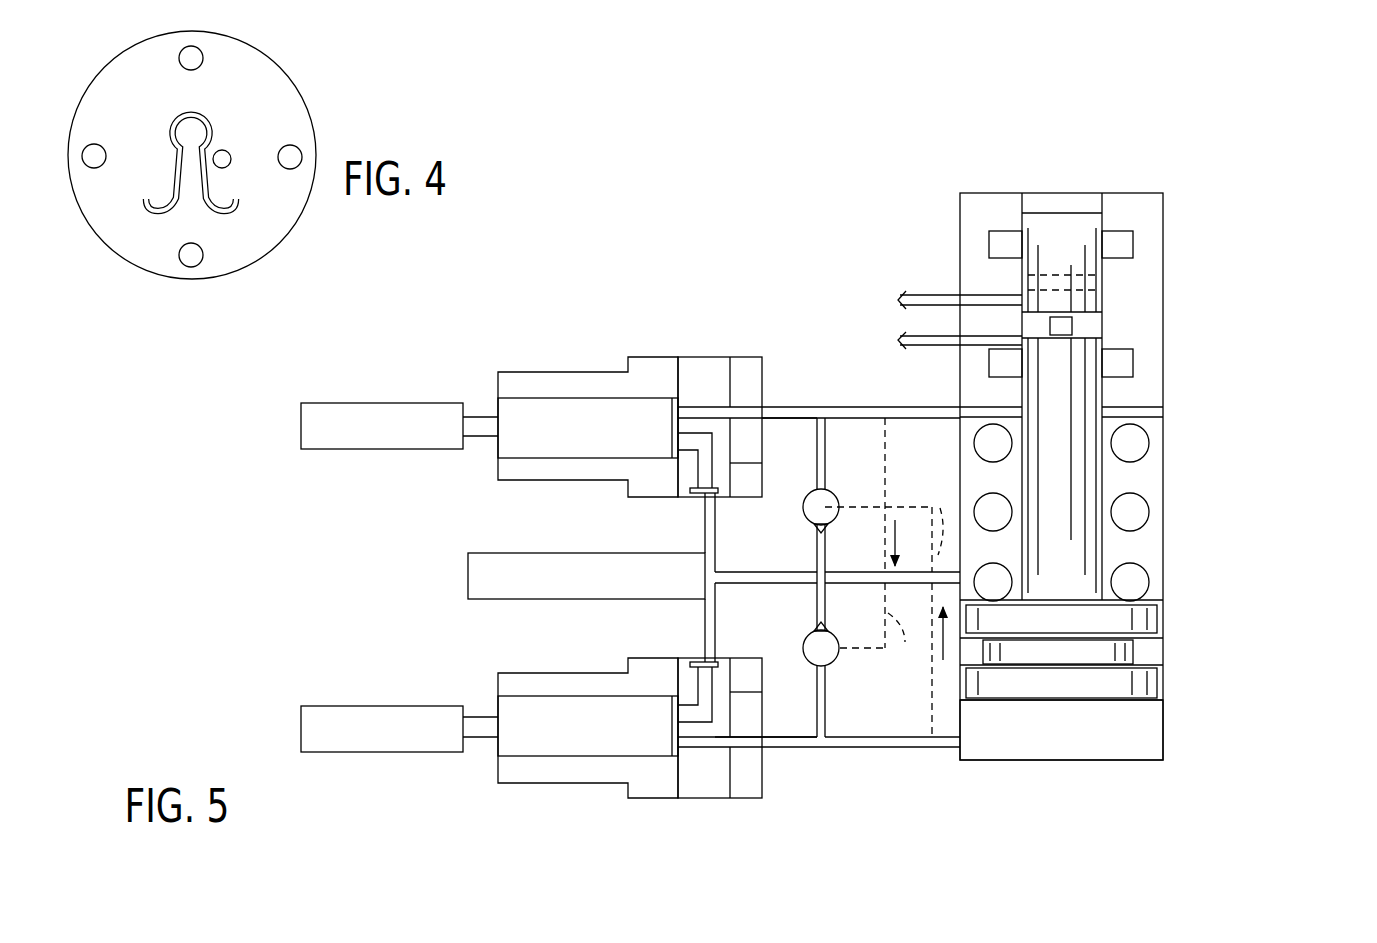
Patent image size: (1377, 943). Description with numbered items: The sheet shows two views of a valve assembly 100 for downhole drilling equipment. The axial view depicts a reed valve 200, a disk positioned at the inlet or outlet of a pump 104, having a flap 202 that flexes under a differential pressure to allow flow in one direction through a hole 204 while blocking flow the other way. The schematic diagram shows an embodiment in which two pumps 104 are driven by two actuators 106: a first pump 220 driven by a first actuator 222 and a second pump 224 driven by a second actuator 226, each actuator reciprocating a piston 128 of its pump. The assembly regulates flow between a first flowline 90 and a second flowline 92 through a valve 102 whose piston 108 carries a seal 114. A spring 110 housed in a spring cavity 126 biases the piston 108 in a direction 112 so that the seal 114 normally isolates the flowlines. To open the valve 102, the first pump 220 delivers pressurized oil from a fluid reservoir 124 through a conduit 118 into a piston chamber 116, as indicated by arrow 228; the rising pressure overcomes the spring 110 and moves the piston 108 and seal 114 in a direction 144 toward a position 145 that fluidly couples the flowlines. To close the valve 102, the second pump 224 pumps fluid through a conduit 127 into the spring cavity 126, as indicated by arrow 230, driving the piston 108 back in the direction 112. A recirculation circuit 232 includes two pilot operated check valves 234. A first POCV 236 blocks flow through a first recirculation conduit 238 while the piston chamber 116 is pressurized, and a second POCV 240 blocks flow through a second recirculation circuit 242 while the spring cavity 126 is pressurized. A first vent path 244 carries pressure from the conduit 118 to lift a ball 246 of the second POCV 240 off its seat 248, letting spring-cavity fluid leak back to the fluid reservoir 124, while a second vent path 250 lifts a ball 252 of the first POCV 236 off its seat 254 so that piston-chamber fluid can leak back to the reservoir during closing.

In FIG. 5, the first flowline 90 is at (915, 290).
In FIG. 5, the second flowline 92 is at (910, 345).
In FIG. 5, the valve assembly 100 is at (676, 172).
In FIG. 5, the valve 102 is at (1235, 245).
In FIG. 5, the pump 104 is at (478, 367).
In FIG. 5, the actuator 106 is at (322, 378).
In FIG. 5, the piston 108 is at (1120, 618).
In FIG. 5, the spring 110 is at (1135, 445).
In FIG. 5, the direction 112 is at (1238, 528).
In FIG. 5, the seal 114 is at (1092, 328).
In FIG. 5, the piston chamber 116 is at (1142, 737).
In FIG. 5, the conduit 118 is at (905, 735).
In FIG. 5, the fluid reservoir 124 is at (596, 553).
In FIG. 5, the spring cavity 126 is at (1130, 478).
In FIG. 5, the conduit 127 is at (908, 407).
In FIG. 5, the piston 128 is at (512, 408).
In FIG. 5, the direction 144 is at (1292, 465).
In FIG. 5, the position 145 is at (1094, 281).
In FIG. 4, the reed valve 200 is at (233, 258).
In FIG. 4, the flap 202 is at (193, 129).
In FIG. 4, the hole 204 is at (177, 111).
In FIG. 5, the first pump 220 is at (565, 784).
In FIG. 5, the first actuator 222 is at (385, 705).
In FIG. 5, the second pump 224 is at (565, 372).
In FIG. 5, the second actuator 226 is at (388, 450).
In FIG. 5, the arrow 228 is at (845, 762).
In FIG. 5, the arrow 230 is at (855, 392).
In FIG. 5, the recirculation circuit 232 is at (912, 474).
In FIG. 5, the pilot operated check valves 234 is at (800, 487).
In FIG. 5, the first POCV 236 is at (830, 643).
In FIG. 5, the first recirculation conduit 238 is at (826, 705).
In FIG. 5, the second POCV 240 is at (815, 502).
In FIG. 5, the second recirculation circuit 242 is at (826, 450).
In FIG. 5, the first vent path 244 is at (937, 515).
In FIG. 5, the ball 246 is at (827, 512).
In FIG. 5, the seat 248 is at (810, 533).
In FIG. 5, the second vent path 250 is at (882, 627).
In FIG. 5, the ball 252 is at (815, 653).
In FIG. 5, the seat 254 is at (815, 626).